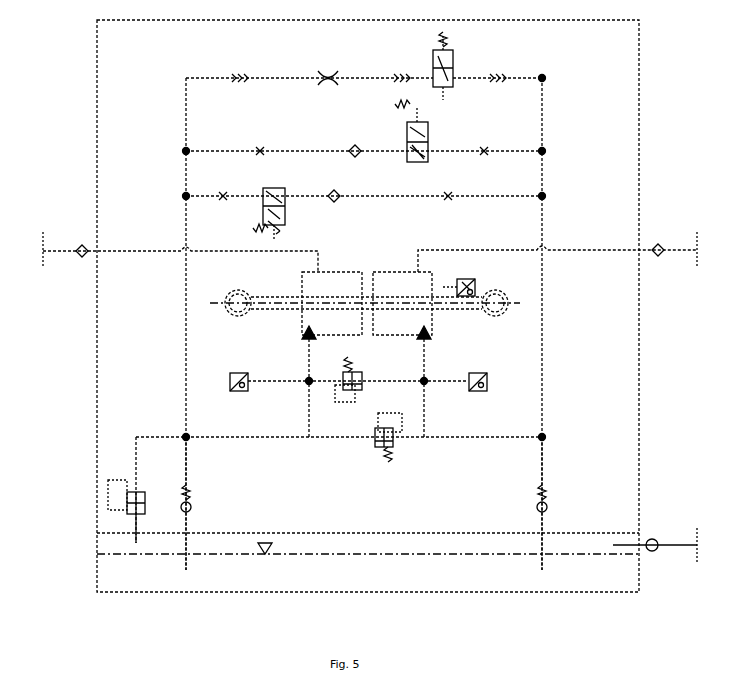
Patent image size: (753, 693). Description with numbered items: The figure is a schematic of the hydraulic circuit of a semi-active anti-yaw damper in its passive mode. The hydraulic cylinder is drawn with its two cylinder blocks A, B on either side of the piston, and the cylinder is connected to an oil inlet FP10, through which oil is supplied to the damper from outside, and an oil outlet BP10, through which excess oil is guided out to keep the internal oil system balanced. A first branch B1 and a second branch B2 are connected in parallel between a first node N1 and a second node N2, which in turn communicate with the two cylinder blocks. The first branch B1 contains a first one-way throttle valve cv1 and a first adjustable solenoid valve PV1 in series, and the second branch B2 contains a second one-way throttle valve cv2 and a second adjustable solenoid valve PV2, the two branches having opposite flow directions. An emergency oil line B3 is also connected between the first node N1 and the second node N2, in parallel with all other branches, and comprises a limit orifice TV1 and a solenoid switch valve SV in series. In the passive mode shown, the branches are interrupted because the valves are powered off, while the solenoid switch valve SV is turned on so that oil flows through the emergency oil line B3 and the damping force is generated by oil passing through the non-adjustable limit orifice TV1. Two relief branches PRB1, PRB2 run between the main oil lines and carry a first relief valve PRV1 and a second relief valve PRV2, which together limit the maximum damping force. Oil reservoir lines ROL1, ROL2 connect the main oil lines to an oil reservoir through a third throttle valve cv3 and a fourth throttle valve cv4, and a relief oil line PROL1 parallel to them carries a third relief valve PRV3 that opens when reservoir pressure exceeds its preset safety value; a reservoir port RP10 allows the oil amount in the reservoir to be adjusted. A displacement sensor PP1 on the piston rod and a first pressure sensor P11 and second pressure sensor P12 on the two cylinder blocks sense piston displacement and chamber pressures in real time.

The limit orifice TV1 is at (364, 70).
The solenoid switch valve SV is at (469, 66).
The emergency oil line B3 is at (553, 79).
The first branch B1 is at (375, 152).
The second branch B2 is at (375, 197).
The first one-way throttle valve cv1 is at (344, 147).
The second one-way throttle valve cv2 is at (346, 192).
The first adjustable solenoid valve PV1 is at (426, 131).
The second adjustable solenoid valve PV2 is at (261, 208).
The oil inlet FP10 is at (180, 255).
The oil outlet BP10 is at (557, 254).
The cylinder chamber A is at (332, 305).
The cylinder chamber B is at (402, 305).
The displacement sensor PP1 is at (460, 279).
The relief branch PRB2 is at (285, 381).
The second pressure sensor P12 is at (238, 391).
The first pressure sensor P11 is at (478, 391).
The second relief valve PRV2 is at (363, 379).
The relief branch PRB1 is at (220, 437).
The first node N1 is at (176, 431).
The second node N2 is at (553, 432).
The first relief valve PRV1 is at (370, 437).
The relief oil line PROL1 is at (136, 458).
The third relief valve PRV3 is at (139, 505).
The oil reservoir line ROL2 is at (187, 460).
The fourth throttle valve cv4 is at (200, 498).
The oil reservoir line ROL1 is at (542, 462).
The third throttle valve cv3 is at (528, 498).
The reservoir port RP10 is at (655, 548).